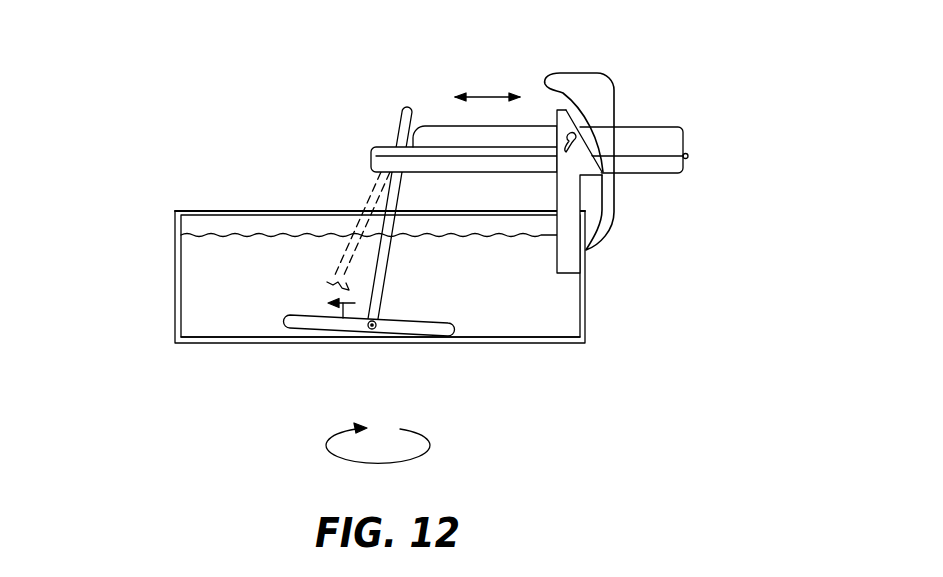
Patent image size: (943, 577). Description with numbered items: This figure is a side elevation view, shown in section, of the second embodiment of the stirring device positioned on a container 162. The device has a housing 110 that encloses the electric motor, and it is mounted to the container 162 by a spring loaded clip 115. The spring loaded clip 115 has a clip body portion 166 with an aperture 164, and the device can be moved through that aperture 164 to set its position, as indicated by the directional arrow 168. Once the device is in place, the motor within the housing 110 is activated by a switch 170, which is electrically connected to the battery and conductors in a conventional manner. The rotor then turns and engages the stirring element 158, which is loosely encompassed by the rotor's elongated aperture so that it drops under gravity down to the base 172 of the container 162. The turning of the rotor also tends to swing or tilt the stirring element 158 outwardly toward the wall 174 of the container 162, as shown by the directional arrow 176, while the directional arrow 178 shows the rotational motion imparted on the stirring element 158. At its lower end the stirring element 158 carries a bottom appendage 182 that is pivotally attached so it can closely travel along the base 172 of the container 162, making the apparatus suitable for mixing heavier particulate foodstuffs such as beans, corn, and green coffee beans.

The housing 110 is at (674, 138).
The spring loaded clip 115 is at (597, 85).
The stirring element 158 is at (408, 110).
The container 162 is at (586, 315).
The aperture 164 is at (566, 115).
The clip body portion 166 is at (570, 198).
The directional arrow 168 is at (495, 97).
The switch 170 is at (688, 156).
The base 172 is at (215, 338).
The wall 174 is at (175, 223).
The directional arrow 176 is at (341, 330).
The directional arrow 178 is at (425, 457).
The bottom appendage 182 is at (455, 333).